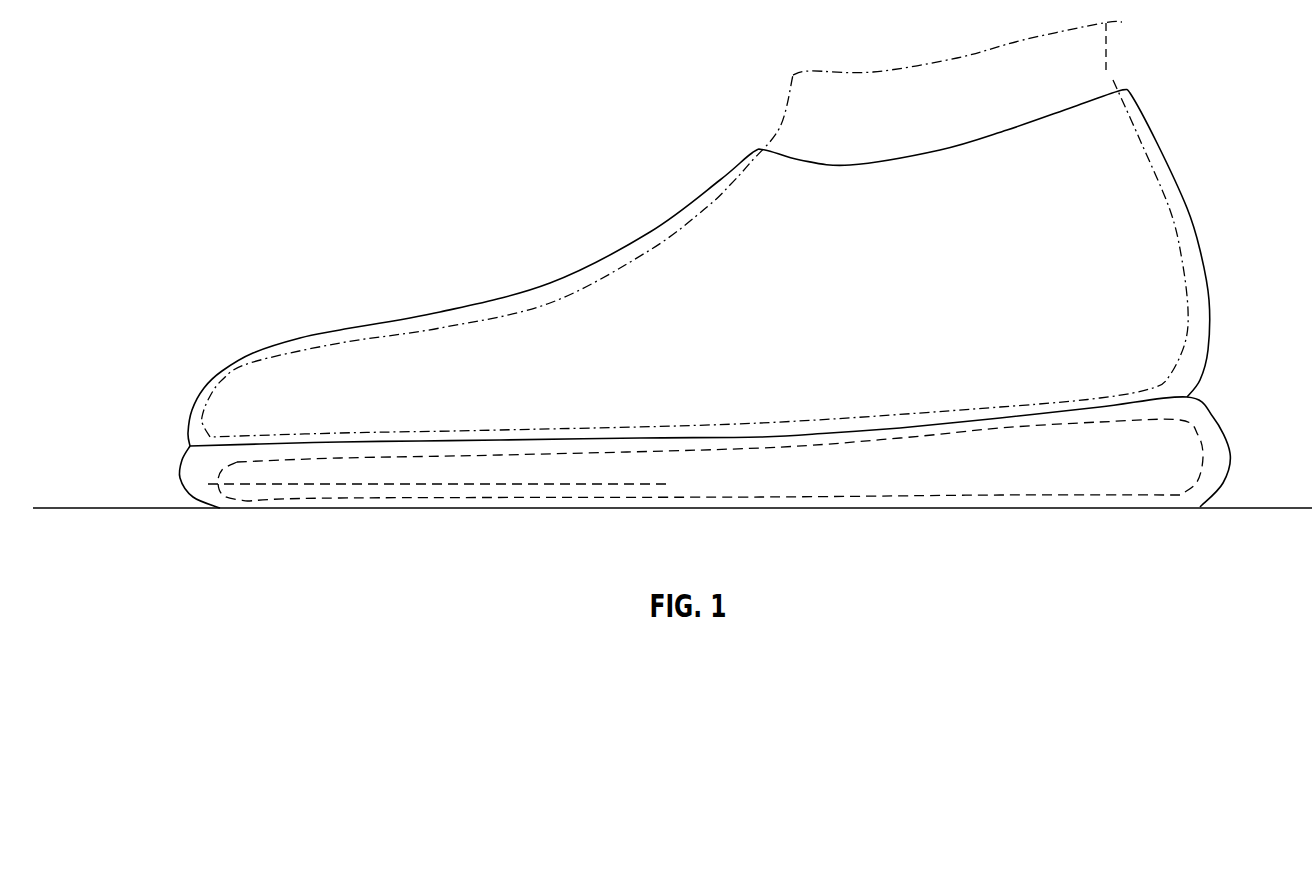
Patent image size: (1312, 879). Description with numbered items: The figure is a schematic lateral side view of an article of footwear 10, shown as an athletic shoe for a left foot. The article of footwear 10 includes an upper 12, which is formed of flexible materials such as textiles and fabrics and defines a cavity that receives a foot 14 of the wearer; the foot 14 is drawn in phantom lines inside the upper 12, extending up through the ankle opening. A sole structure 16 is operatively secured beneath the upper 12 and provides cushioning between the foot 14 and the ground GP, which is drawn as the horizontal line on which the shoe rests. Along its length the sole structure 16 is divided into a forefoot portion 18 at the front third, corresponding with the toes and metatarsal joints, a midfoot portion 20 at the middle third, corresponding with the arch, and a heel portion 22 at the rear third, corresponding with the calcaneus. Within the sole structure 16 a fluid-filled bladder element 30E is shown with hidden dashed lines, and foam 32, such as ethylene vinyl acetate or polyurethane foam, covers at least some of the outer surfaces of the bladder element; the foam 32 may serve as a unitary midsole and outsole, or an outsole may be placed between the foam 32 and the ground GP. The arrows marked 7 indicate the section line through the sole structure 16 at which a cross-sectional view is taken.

The article of footwear 10 is at (639, 147).
The upper 12 is at (550, 283).
The foot 14 is at (1114, 77).
The sole structure 16 is at (182, 470).
The forefoot portion 18 is at (418, 510).
The midfoot portion 20 is at (778, 510).
The heel portion 22 is at (1123, 508).
The sole structure 30E is at (1215, 450).
The foam 32 is at (225, 497).
The section line 7- 7 is at (222, 472).
The ground GP is at (90, 508).